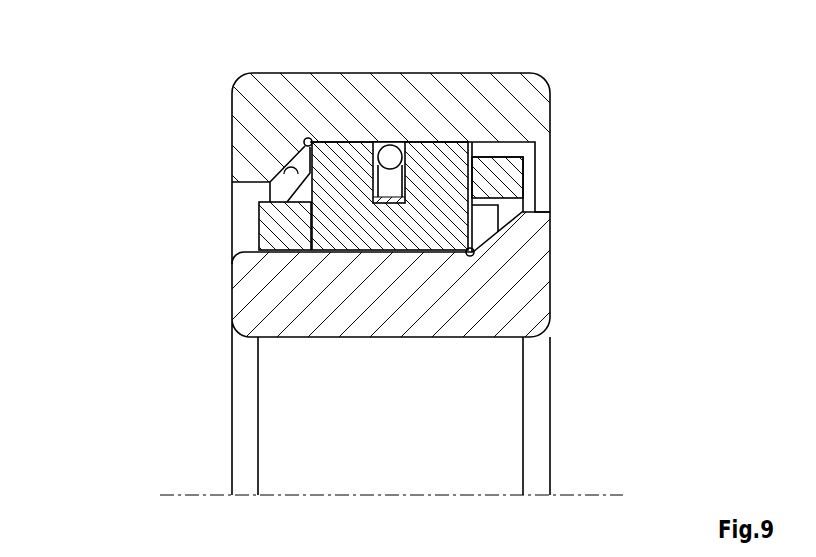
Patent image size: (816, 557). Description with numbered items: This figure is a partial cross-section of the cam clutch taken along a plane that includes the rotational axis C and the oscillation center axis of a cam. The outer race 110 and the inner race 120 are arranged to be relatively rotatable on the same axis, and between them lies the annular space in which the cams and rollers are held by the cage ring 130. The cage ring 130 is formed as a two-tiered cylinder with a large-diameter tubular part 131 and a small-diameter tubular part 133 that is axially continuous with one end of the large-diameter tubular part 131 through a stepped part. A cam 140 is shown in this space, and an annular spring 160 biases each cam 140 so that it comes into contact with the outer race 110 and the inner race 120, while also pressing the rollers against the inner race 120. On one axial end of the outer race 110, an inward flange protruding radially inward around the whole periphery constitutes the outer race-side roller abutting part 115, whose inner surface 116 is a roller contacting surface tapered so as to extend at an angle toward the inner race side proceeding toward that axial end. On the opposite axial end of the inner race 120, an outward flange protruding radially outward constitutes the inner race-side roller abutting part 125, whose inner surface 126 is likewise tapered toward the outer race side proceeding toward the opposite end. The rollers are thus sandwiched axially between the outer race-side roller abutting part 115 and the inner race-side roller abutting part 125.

The outer race 110 is at (231, 120).
The outer race-side roller abutting part 115 is at (262, 183).
The inner surface 116 is at (291, 163).
The inner race 120 is at (517, 290).
The inner race-side roller abutting part 125 is at (525, 212).
The inner surface 126 is at (470, 257).
The cage ring 130 is at (497, 157).
The large-diameter tubular part 131 is at (524, 172).
The small-diameter tubular part 133 is at (258, 218).
The cam 140 is at (390, 251).
The annular spring 160 is at (388, 152).
The rotational axis C is at (167, 494).